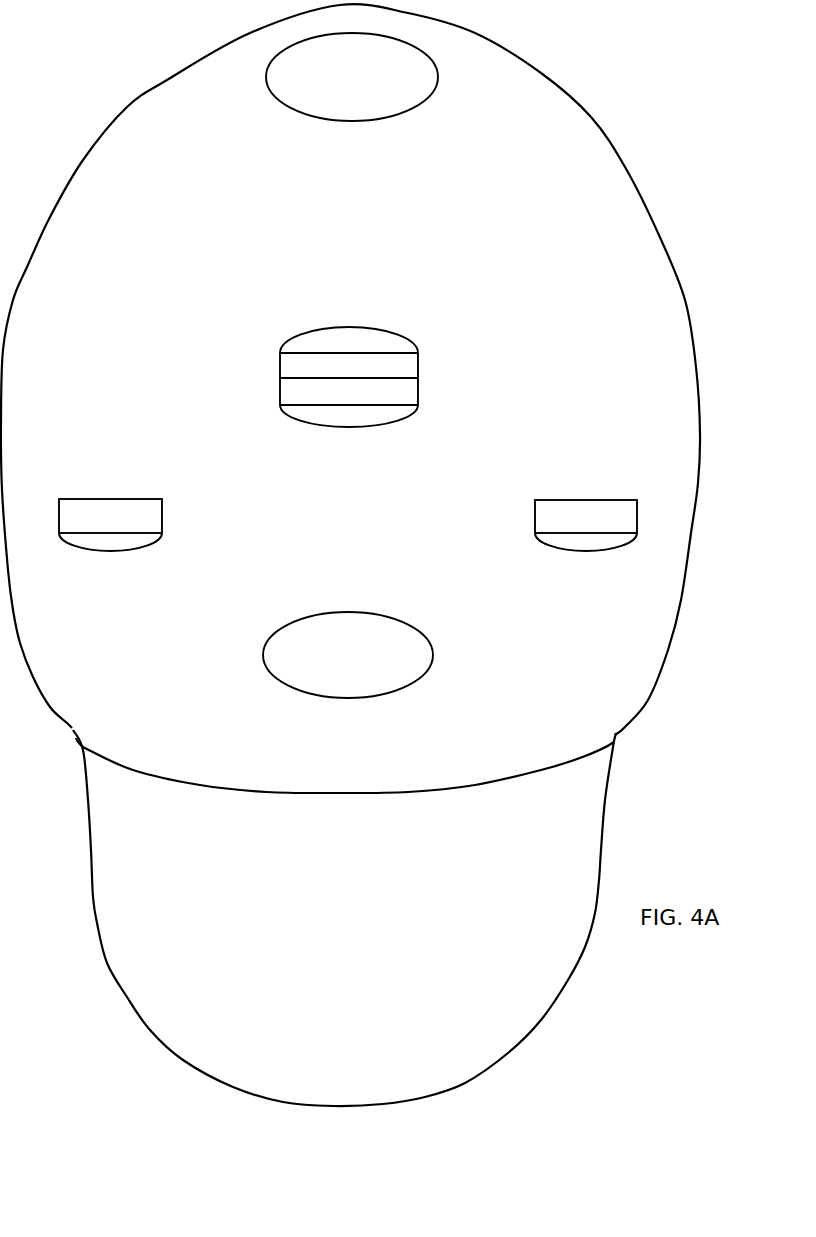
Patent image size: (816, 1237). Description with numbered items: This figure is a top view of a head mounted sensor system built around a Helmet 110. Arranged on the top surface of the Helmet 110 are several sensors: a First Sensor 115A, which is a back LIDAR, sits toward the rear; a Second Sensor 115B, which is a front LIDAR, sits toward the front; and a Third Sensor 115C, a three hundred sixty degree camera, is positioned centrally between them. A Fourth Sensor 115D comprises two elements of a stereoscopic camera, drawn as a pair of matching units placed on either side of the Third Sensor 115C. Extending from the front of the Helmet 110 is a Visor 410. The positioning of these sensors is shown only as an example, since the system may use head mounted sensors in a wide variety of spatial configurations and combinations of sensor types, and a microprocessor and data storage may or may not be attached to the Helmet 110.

The helmet 110 is at (130, 103).
The first sensor 115A is at (370, 119).
The second sensor 115B is at (420, 628).
The third sensor 115C is at (419, 375).
The fourth sensor 115D is at (107, 499).
The visor 410 is at (97, 924).